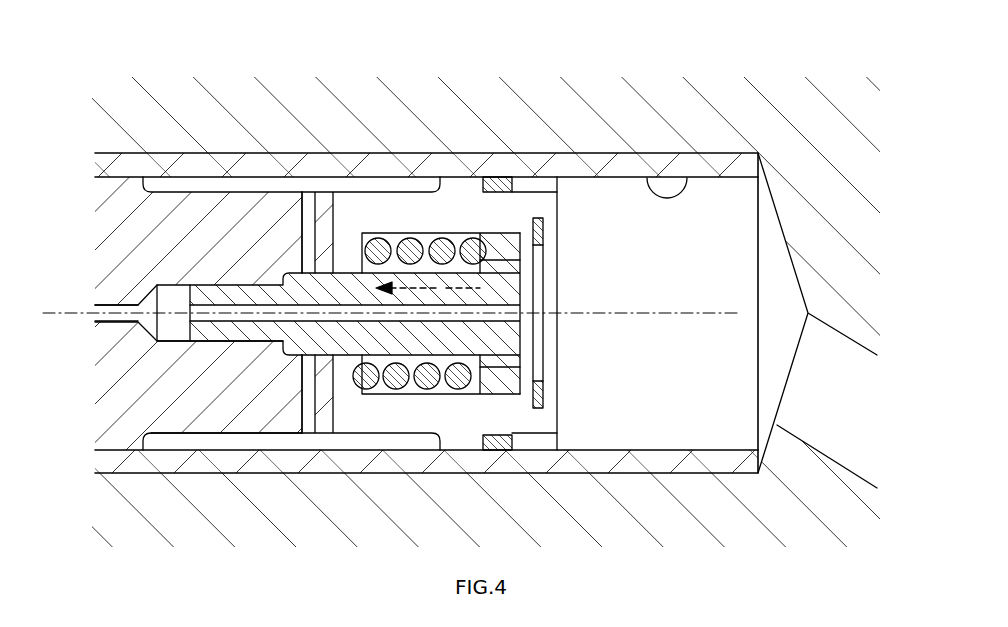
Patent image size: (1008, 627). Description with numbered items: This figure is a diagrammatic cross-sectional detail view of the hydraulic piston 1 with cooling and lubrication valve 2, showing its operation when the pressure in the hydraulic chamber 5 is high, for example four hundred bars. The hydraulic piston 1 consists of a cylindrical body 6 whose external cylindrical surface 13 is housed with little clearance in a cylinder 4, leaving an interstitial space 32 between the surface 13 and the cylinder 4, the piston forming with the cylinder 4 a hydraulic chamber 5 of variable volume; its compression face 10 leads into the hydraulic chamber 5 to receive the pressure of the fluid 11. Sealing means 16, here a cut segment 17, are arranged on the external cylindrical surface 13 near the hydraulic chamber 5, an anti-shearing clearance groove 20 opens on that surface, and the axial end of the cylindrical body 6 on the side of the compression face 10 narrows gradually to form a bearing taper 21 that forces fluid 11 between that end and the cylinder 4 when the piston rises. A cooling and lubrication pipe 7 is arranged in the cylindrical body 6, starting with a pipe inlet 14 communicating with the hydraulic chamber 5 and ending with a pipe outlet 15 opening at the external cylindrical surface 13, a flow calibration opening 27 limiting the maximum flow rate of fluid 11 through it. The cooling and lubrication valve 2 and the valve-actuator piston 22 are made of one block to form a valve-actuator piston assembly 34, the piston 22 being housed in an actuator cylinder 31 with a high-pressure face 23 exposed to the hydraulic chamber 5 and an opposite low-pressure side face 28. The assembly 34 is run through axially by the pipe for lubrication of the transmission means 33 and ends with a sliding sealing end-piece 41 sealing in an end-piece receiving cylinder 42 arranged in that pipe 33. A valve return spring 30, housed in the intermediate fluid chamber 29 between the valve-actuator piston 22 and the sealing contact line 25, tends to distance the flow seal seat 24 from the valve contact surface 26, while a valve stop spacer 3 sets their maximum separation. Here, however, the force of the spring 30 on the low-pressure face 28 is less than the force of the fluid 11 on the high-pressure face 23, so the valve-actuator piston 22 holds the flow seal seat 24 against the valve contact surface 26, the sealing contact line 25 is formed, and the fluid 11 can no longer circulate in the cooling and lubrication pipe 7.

The hydraulic piston 1 is at (113, 224).
The cooling and lubrication valve 2 is at (393, 257).
The valve stop spacer 3 is at (589, 213).
The cylinder 4 is at (705, 213).
The hydraulic chamber 5 is at (743, 78).
The cylindrical body 6 is at (172, 289).
The cooling and lubrication pipe 7 is at (311, 216).
The compression face 10 is at (557, 425).
The fluid 11 is at (711, 249).
The external cylindrical surface 13 is at (113, 450).
The pipe inlet 14 is at (523, 352).
The pipe outlet 15 is at (302, 177).
The sealing means 16 is at (489, 174).
The cut segment 17 is at (502, 184).
The anti-shearing clearance groove 20 is at (176, 433).
The bearing taper 21 is at (546, 218).
The valve-actuator piston 22 is at (538, 410).
The high-pressure face 23 is at (523, 275).
The flow seal seat 24 is at (372, 262).
The sealing contact line 25 is at (358, 270).
The valve contact surface 26 is at (402, 385).
The flow calibration opening 27 is at (487, 233).
The low-pressure side face 28 is at (468, 383).
The intermediate fluid chamber 29 is at (420, 240).
The valve return spring 30 is at (437, 385).
The actuator cylinder 31 is at (355, 385).
The interstitial space 32 is at (86, 178).
The pipe for lubrication of the transmission means 33 is at (112, 322).
The valve-actuator piston assembly 34 is at (491, 338).
The sliding sealing end-piece 41 is at (232, 283).
The end-piece receiving cylinder 42 is at (158, 218).